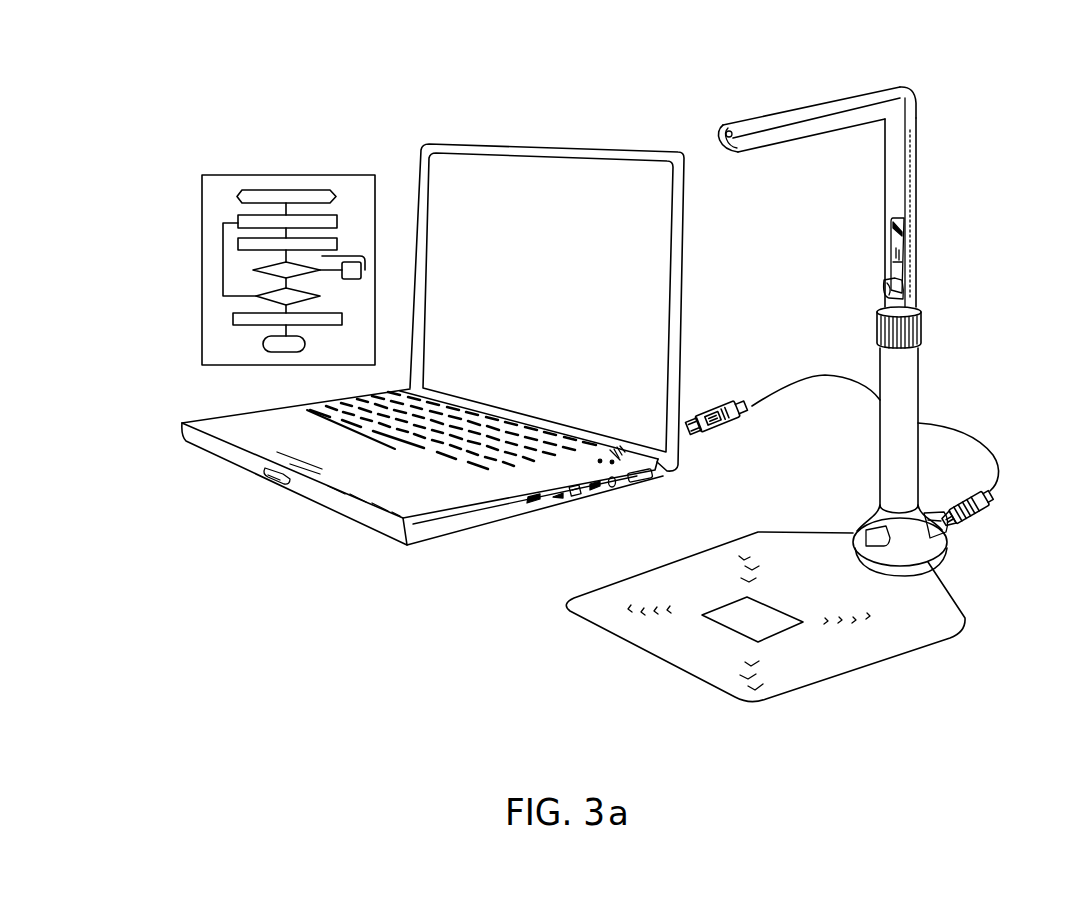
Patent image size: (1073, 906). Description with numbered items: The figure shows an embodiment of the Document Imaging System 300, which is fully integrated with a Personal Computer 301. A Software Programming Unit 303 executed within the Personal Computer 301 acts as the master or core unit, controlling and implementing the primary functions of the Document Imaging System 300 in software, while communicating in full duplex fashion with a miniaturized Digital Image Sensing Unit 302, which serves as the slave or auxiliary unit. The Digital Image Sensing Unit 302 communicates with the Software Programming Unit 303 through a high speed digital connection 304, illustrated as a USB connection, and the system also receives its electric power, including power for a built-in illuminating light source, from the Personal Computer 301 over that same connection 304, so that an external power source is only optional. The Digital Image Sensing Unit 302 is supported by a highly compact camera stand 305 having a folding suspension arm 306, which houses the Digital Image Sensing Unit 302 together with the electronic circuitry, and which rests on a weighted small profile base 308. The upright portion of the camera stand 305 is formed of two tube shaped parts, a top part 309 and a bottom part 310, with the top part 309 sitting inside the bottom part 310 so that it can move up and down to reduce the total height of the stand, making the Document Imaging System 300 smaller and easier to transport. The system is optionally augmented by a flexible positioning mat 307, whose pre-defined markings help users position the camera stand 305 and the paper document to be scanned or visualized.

The Document Imaging System 300 is at (318, 100).
The Personal Computer 301 is at (500, 408).
The Digital Image Sensing Unit 302 is at (743, 151).
The Software Programming Unit 303 is at (230, 175).
The high speed digital connection 304 is at (982, 442).
The camera stand 305 is at (918, 380).
The folding suspension arm 306 is at (788, 117).
The flexible positioning mat 307 is at (767, 704).
The weighted small profile base 308 is at (930, 566).
The top part 309 is at (913, 196).
The bottom part 310 is at (918, 403).